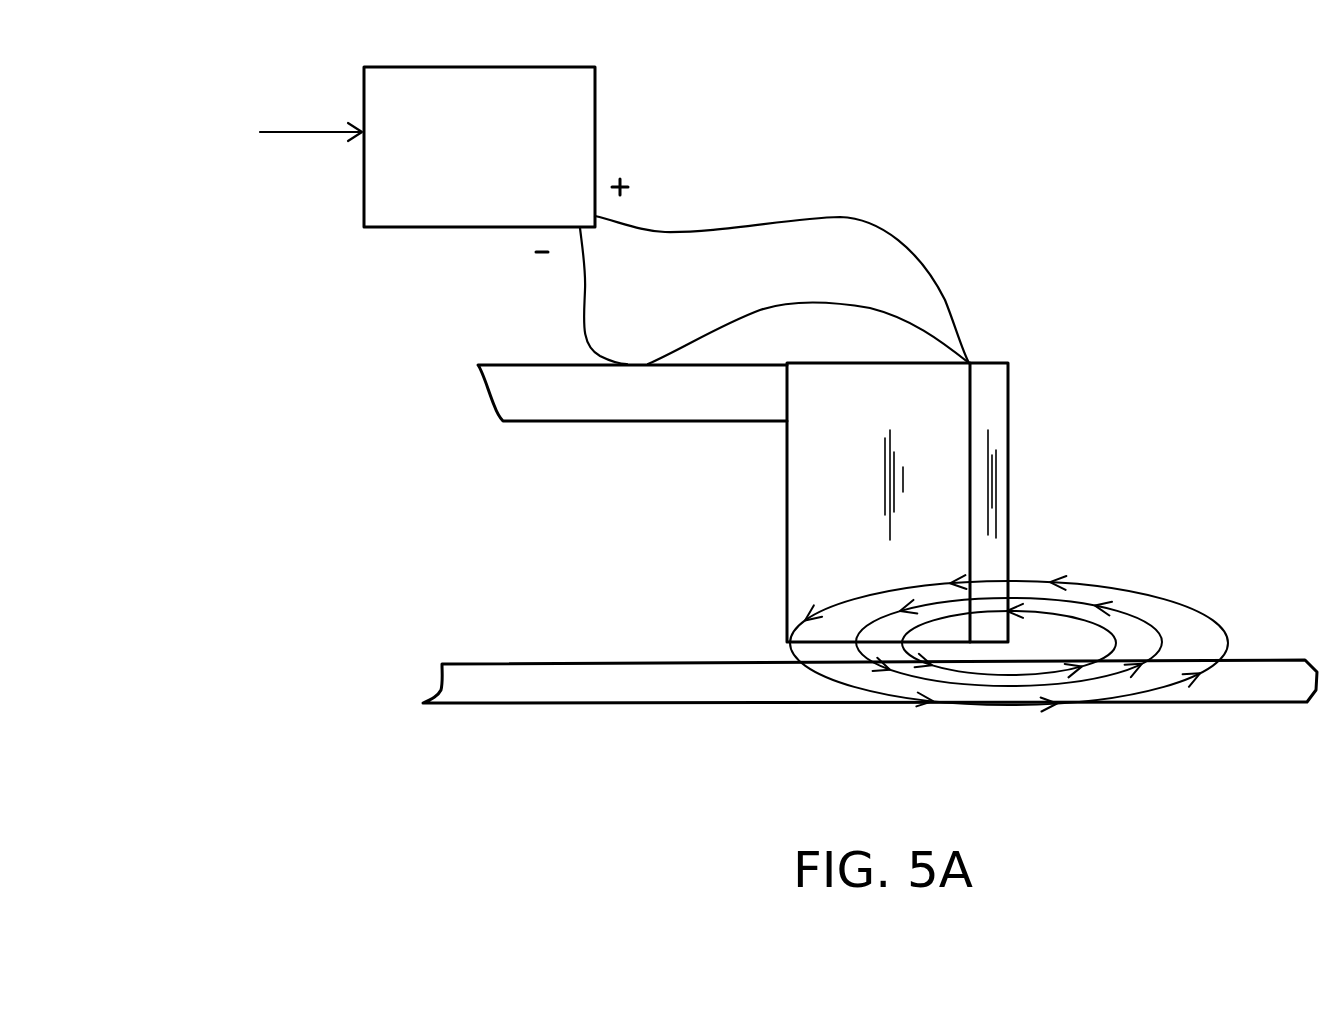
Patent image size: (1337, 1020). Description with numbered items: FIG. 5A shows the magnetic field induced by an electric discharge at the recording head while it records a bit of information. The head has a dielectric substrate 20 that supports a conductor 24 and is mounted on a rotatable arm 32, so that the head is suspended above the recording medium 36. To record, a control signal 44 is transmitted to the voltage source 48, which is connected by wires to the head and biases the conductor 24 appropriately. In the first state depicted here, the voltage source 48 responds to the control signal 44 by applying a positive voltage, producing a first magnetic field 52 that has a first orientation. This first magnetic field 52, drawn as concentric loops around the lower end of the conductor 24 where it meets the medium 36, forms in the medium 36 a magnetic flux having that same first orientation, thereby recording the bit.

The dielectric substrate 20 is at (787, 504).
The conductor 24 is at (989, 363).
The rotatable arm 32 is at (606, 421).
The recording medium 36 is at (703, 703).
The control signal 44 is at (310, 117).
The voltage source 48 is at (595, 109).
The first magnetic field 52 is at (1095, 582).